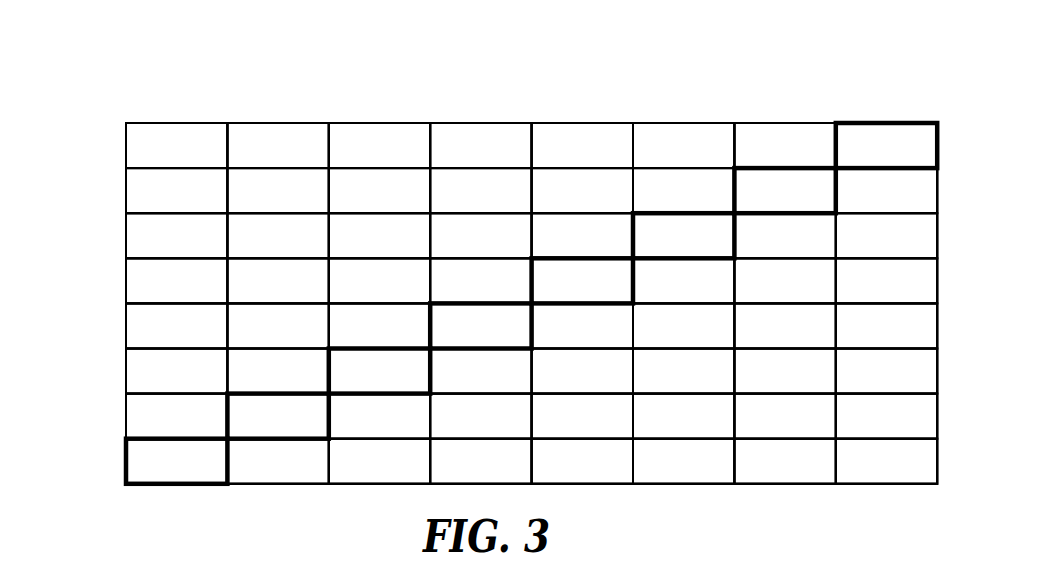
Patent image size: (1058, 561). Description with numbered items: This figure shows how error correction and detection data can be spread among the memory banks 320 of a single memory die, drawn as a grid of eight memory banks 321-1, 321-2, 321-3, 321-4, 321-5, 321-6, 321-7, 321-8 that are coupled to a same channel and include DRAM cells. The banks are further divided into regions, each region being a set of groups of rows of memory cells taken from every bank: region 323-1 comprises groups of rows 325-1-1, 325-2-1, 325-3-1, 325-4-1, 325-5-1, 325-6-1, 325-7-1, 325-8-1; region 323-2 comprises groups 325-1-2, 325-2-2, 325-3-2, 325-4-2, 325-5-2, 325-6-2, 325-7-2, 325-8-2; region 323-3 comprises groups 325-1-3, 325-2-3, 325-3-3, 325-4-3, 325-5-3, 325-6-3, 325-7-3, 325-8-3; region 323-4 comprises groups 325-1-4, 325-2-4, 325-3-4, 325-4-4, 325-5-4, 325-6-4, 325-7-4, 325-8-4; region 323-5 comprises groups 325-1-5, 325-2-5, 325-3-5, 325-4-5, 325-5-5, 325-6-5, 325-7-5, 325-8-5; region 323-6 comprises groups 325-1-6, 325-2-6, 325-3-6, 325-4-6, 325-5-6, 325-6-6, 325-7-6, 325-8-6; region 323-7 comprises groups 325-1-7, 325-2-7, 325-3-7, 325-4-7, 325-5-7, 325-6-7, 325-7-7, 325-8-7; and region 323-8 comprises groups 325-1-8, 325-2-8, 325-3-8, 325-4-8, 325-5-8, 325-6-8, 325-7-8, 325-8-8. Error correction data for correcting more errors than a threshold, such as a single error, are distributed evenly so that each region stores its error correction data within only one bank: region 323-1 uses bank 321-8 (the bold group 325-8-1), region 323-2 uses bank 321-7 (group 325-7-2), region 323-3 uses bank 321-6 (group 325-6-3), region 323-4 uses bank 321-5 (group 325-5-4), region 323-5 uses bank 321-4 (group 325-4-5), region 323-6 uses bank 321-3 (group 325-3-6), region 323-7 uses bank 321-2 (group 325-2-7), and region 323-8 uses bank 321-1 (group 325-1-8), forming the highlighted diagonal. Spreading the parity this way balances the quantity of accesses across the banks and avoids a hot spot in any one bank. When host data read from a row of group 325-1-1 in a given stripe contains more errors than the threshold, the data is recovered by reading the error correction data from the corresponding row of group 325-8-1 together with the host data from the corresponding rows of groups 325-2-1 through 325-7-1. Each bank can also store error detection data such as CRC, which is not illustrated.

The memory banks 320 is at (130, 56).
The memory bank 321-1 is at (177, 117).
The memory bank 321-2 is at (278, 117).
The memory bank 321-3 is at (380, 117).
The memory bank 321-4 is at (481, 117).
The memory bank 321-5 is at (582, 117).
The memory bank 321-6 is at (684, 117).
The memory bank 321-7 is at (785, 117).
The memory bank 321-8 is at (886, 117).
The region 323-1 is at (115, 125).
The region 323-2 is at (115, 170).
The region 323-3 is at (115, 215).
The region 323-4 is at (115, 260).
The region 323-5 is at (115, 305).
The region 323-6 is at (115, 350).
The region 323-7 is at (115, 396).
The region 323-8 is at (115, 441).
The group of rows of memory cells 325-1-1 is at (211, 158).
The group of rows of memory cells 325-2-1 is at (244, 158).
The group of rows of memory cells 325-3-1 is at (414, 158).
The group of rows of memory cells 325-4-1 is at (515, 158).
The group of rows of memory cells 325-5-1 is at (548, 158).
The group of rows of memory cells 325-6-1 is at (718, 158).
The group of rows of memory cells 325-7-1 is at (751, 158).
The group of rows of memory cells 325-8-1 is at (852, 158).
The group of rows of memory cells 325-1-2 is at (211, 204).
The group of rows of memory cells 325-2-2 is at (244, 204).
The group of rows of memory cells 325-3-2 is at (414, 204).
The group of rows of memory cells 325-4-2 is at (515, 204).
The group of rows of memory cells 325-5-2 is at (548, 204).
The group of rows of memory cells 325-6-2 is at (718, 204).
The group of rows of memory cells 325-7-2 is at (751, 204).
The group of rows of memory cells 325-8-2 is at (852, 204).
The group of rows of memory cells 325-1-3 is at (211, 248).
The group of rows of memory cells 325-2-3 is at (244, 248).
The group of rows of memory cells 325-3-3 is at (414, 248).
The group of rows of memory cells 325-4-3 is at (515, 248).
The group of rows of memory cells 325-5-3 is at (548, 248).
The group of rows of memory cells 325-6-3 is at (718, 248).
The group of rows of memory cells 325-7-3 is at (751, 248).
The group of rows of memory cells 325-8-3 is at (852, 248).
The group of rows of memory cells 325-1-4 is at (211, 294).
The group of rows of memory cells 325-2-4 is at (244, 294).
The group of rows of memory cells 325-3-4 is at (414, 294).
The group of rows of memory cells 325-4-4 is at (515, 294).
The group of rows of memory cells 325-5-4 is at (548, 294).
The group of rows of memory cells 325-6-4 is at (718, 294).
The group of rows of memory cells 325-7-4 is at (751, 294).
The group of rows of memory cells 325-8-4 is at (852, 294).
The group of rows of memory cells 325-1-5 is at (211, 338).
The group of rows of memory cells 325-2-5 is at (244, 338).
The group of rows of memory cells 325-3-5 is at (414, 338).
The group of rows of memory cells 325-4-5 is at (515, 338).
The group of rows of memory cells 325-5-5 is at (548, 338).
The group of rows of memory cells 325-6-5 is at (718, 338).
The group of rows of memory cells 325-7-5 is at (751, 338).
The group of rows of memory cells 325-8-5 is at (852, 338).
The group of rows of memory cells 325-1-6 is at (211, 384).
The group of rows of memory cells 325-2-6 is at (244, 384).
The group of rows of memory cells 325-3-6 is at (414, 384).
The group of rows of memory cells 325-4-6 is at (515, 384).
The group of rows of memory cells 325-5-6 is at (548, 384).
The group of rows of memory cells 325-6-6 is at (718, 384).
The group of rows of memory cells 325-7-6 is at (751, 384).
The group of rows of memory cells 325-8-6 is at (852, 384).
The group of rows of memory cells 325-1-7 is at (211, 430).
The group of rows of memory cells 325-2-7 is at (244, 430).
The group of rows of memory cells 325-3-7 is at (414, 430).
The group of rows of memory cells 325-4-7 is at (515, 430).
The group of rows of memory cells 325-5-7 is at (548, 430).
The group of rows of memory cells 325-6-7 is at (718, 430).
The group of rows of memory cells 325-7-7 is at (751, 430).
The group of rows of memory cells 325-8-7 is at (852, 430).
The group of rows of memory cells 325-1-8 is at (211, 474).
The group of rows of memory cells 325-2-8 is at (244, 474).
The group of rows of memory cells 325-3-8 is at (414, 474).
The group of rows of memory cells 325-4-8 is at (515, 474).
The group of rows of memory cells 325-5-8 is at (548, 474).
The group of rows of memory cells 325-6-8 is at (718, 474).
The group of rows of memory cells 325-7-8 is at (751, 474).
The group of rows of memory cells 325-8-8 is at (852, 474).